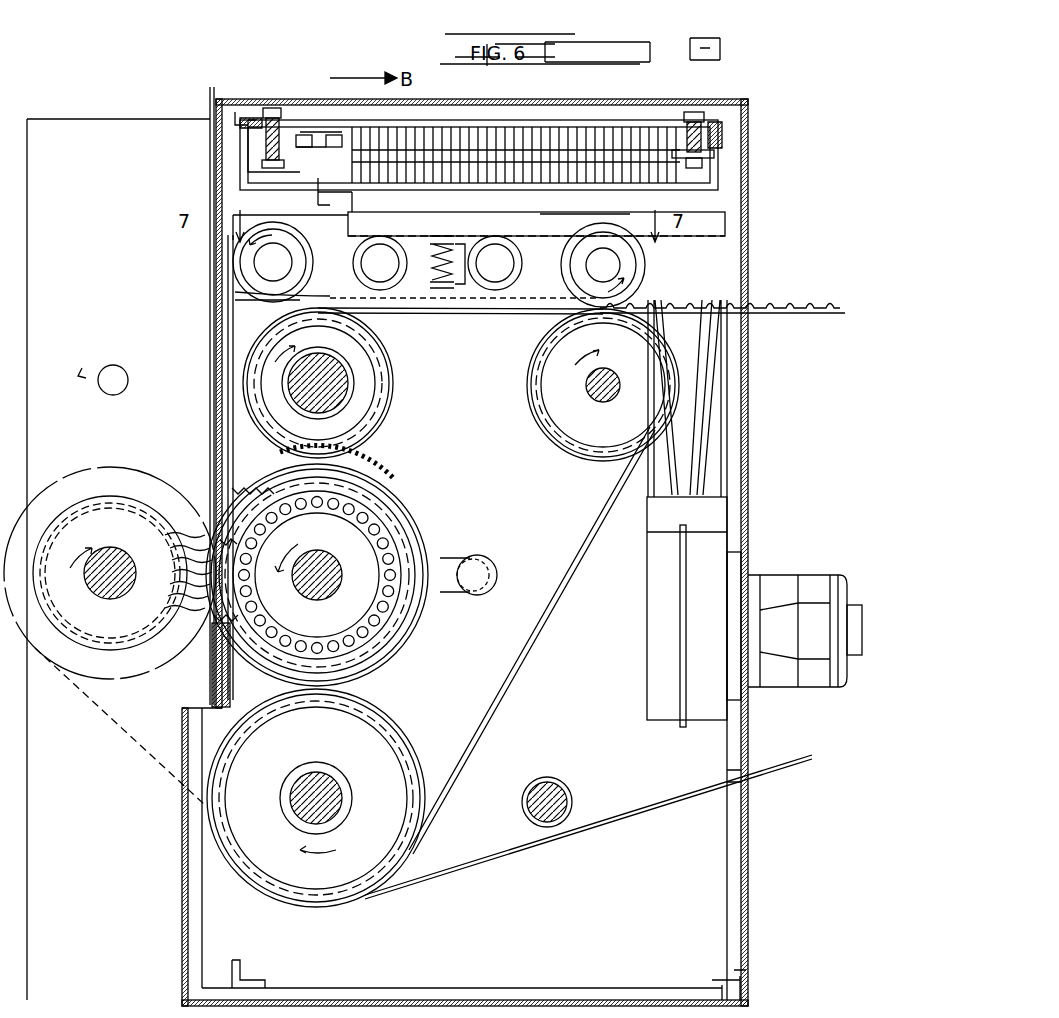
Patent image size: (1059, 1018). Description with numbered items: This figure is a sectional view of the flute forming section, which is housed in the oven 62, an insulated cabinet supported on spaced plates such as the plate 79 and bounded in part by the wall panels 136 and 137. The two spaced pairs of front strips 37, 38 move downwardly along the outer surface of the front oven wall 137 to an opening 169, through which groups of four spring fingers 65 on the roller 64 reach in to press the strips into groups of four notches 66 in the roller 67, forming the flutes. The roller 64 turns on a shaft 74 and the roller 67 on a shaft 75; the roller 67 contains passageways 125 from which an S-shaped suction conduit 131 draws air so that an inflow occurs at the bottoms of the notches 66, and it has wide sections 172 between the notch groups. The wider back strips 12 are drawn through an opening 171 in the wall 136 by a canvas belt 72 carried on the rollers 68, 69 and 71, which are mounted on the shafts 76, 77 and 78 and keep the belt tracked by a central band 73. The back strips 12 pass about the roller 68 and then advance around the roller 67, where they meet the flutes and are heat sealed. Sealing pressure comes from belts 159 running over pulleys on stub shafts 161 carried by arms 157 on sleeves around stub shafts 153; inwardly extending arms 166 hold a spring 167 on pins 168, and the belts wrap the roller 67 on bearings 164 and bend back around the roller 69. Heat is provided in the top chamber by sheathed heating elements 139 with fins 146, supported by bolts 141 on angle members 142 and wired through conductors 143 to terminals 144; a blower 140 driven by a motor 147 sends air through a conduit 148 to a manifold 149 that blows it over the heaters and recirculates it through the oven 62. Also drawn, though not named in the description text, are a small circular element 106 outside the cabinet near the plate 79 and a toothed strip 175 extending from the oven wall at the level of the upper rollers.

The back strip 12 is at (812, 316).
The strip 37 is at (212, 103).
The strip 38 is at (212, 88).
The oven 62 is at (765, 150).
The roller 64 is at (85, 530).
The spring finger 65 is at (185, 530).
The notch 66 is at (240, 486).
The roller 67 is at (395, 518).
The roller 68 is at (372, 742).
The roller 69 is at (370, 385).
The roller 71 is at (563, 384).
The canvas belt 72 is at (585, 565).
The central band 73 is at (548, 622).
The shaft 74 is at (110, 602).
The shaft 75 is at (320, 590).
The shaft 76 is at (318, 772).
The shaft 77 is at (335, 400).
The shaft 78 is at (588, 386).
The plate 79 is at (57, 115).
The pivot 106 is at (81, 377).
The passageway 125 is at (310, 520).
The suction conduit 131 is at (450, 600).
The wall panel 136 is at (748, 862).
The wall panel 137 is at (185, 800).
The heating element 139 is at (385, 165).
The blower 140 is at (705, 542).
The bolt 141 is at (272, 108).
The oven angle member 142 is at (262, 120).
The electric conductor 143 is at (311, 184).
The terminal 144 is at (300, 135).
The fin 146 is at (470, 135).
The motor 147 is at (782, 580).
The conduit 148 is at (705, 425).
The manifold 149 is at (715, 215).
The stub shaft 153 is at (380, 283).
The arm 157 is at (442, 263).
The belt 159 is at (585, 205).
The stub shaft 161 is at (268, 262).
The bearing 164 is at (240, 578).
The arm 166 is at (462, 244).
The spring 167 is at (500, 245).
The pin 168 is at (440, 240).
The opening 169 is at (212, 640).
The opening 171 is at (745, 780).
The wide section 172 is at (370, 472).
The toothed strip 175 is at (730, 302).